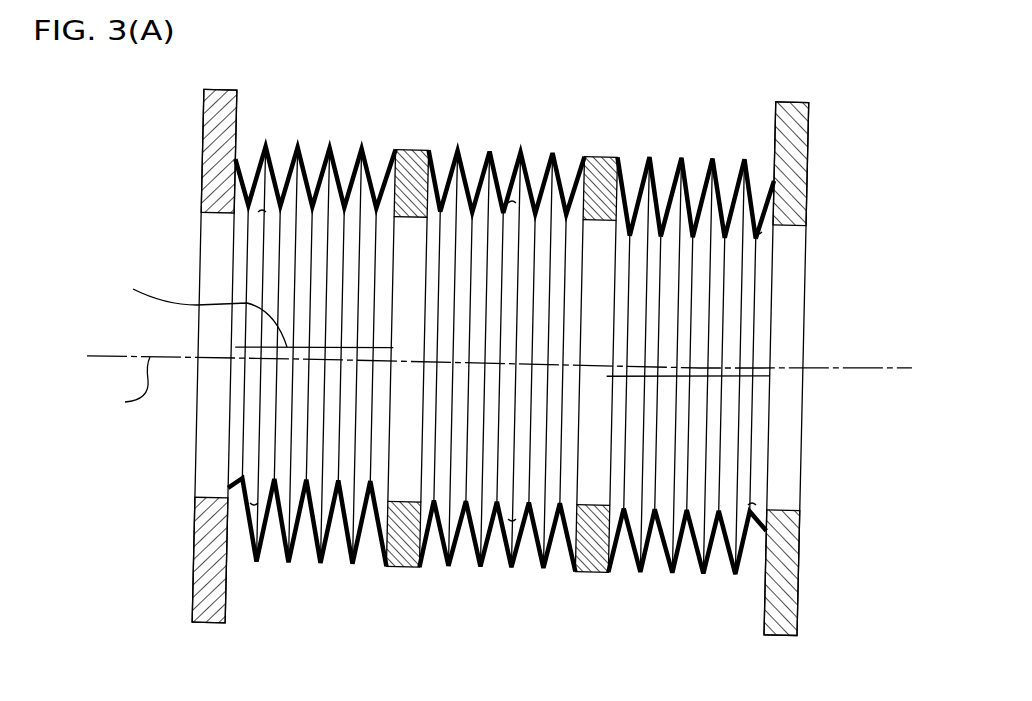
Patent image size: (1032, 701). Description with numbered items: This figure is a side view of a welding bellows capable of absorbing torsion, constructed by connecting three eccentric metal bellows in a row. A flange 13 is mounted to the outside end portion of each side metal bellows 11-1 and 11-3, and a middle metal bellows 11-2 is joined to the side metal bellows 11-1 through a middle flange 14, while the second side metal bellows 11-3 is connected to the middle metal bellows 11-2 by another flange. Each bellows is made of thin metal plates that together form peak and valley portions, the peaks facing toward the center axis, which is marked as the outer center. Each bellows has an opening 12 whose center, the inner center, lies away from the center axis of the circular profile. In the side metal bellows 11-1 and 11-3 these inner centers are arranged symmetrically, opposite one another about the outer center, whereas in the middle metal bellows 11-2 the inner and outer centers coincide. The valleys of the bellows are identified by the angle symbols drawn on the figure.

The flange 13 is at (223, 88).
The side metal bellows 11-1 is at (362, 162).
The middle metal bellows 11-2 is at (492, 163).
The second side metal bellows 11-3 is at (680, 163).
The opening 12 is at (747, 413).
The middle flange 14 is at (423, 445).